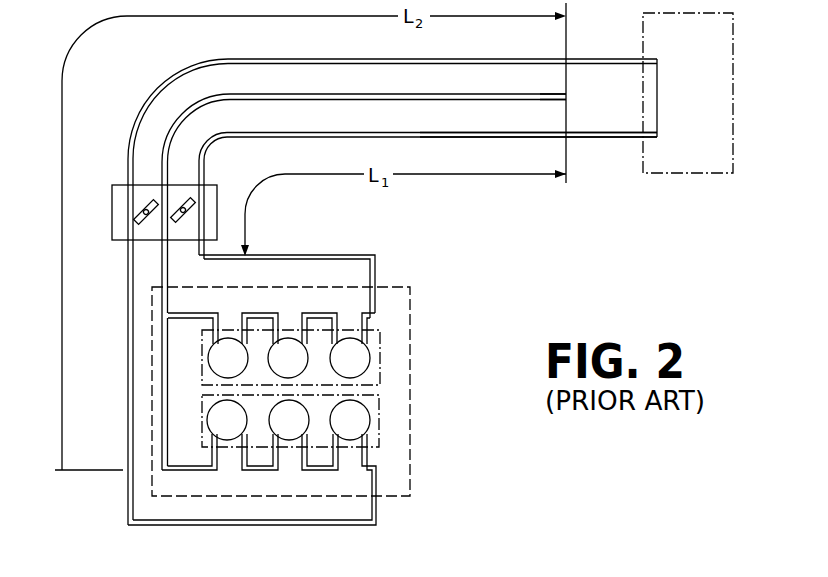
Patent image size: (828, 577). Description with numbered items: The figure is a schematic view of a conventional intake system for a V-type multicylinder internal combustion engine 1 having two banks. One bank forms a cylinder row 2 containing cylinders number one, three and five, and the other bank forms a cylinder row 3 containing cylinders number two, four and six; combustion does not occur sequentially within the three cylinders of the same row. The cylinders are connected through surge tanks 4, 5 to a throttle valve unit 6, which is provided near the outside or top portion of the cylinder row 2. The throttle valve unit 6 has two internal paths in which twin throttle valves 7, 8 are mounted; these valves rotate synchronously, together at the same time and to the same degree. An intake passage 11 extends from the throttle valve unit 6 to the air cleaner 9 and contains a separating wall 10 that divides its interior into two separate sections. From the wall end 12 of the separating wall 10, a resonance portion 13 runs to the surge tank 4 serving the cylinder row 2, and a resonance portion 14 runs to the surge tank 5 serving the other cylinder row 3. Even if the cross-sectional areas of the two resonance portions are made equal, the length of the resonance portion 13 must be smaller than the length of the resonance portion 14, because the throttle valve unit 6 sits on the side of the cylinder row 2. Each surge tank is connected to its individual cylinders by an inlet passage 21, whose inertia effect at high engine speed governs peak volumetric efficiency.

The V-type multicylinder internal combustion engine 1 is at (398, 478).
The cylinder row 2 is at (378, 378).
The other cylinder row 3 is at (378, 440).
The surge tank 4 is at (368, 275).
The surge tank 5 is at (378, 517).
The throttle valve unit 6 is at (110, 192).
The throttle valve 7 is at (192, 203).
The throttle valve 8 is at (137, 222).
The air cleaner 9 is at (698, 175).
The separating wall 10 is at (462, 93).
The intake passage 11 is at (497, 136).
The wall end 12 is at (566, 96).
The resonance portion 13 is at (303, 124).
The resonance portion 14 is at (294, 74).
The inlet passage 21 is at (366, 322).